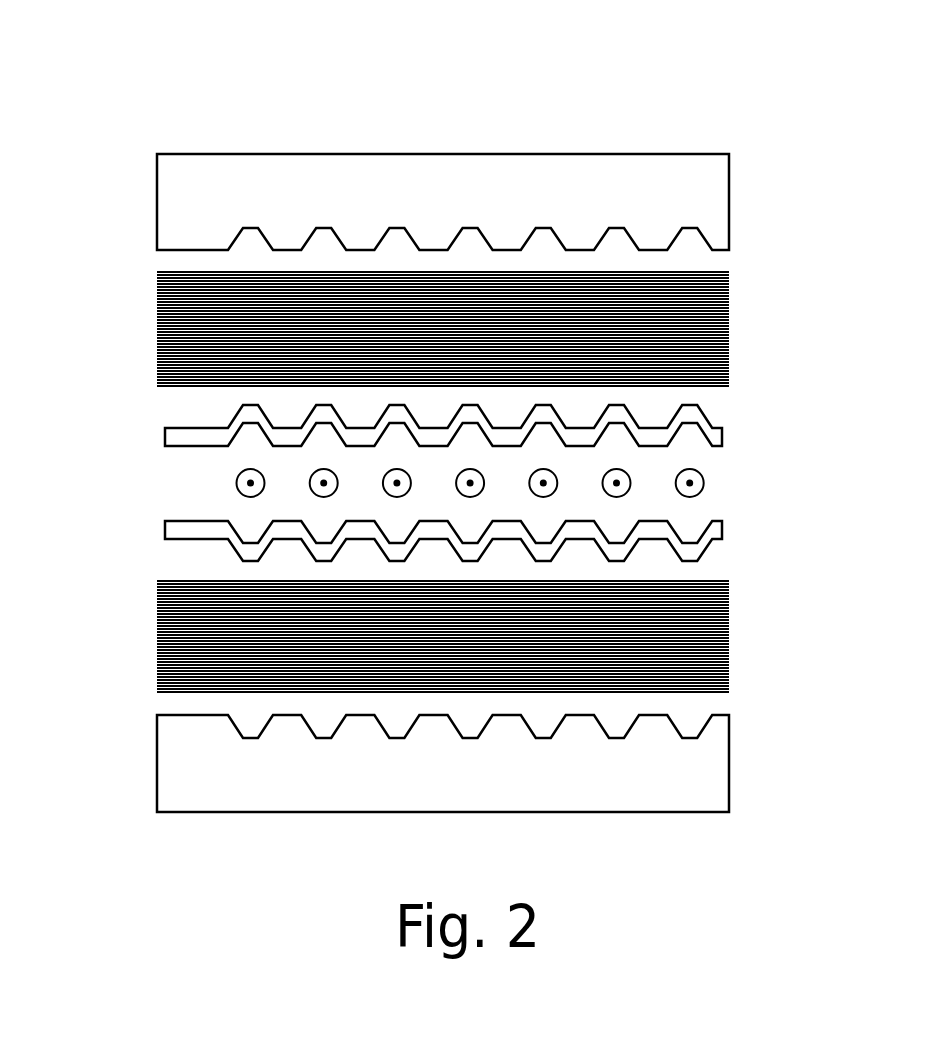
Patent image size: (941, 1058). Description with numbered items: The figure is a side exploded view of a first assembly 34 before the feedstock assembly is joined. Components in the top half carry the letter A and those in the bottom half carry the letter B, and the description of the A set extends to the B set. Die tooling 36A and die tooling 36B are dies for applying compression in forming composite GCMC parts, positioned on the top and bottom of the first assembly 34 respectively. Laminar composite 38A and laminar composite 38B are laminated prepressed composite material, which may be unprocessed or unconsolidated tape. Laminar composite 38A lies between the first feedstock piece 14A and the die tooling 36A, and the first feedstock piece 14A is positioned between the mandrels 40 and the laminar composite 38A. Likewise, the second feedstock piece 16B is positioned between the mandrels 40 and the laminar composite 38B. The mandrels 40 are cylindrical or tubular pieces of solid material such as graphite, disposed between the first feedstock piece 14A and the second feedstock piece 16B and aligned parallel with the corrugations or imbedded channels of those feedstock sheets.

The first assembly 34 is at (212, 130).
The die tooling 36A is at (729, 195).
The die tooling 36B is at (729, 763).
The laminar composite 38A is at (753, 273).
The laminar composite 38B is at (753, 580).
The first feedstock piece 14A is at (188, 428).
The second feedstock piece 16B is at (190, 521).
The mandrels 40 is at (733, 465).